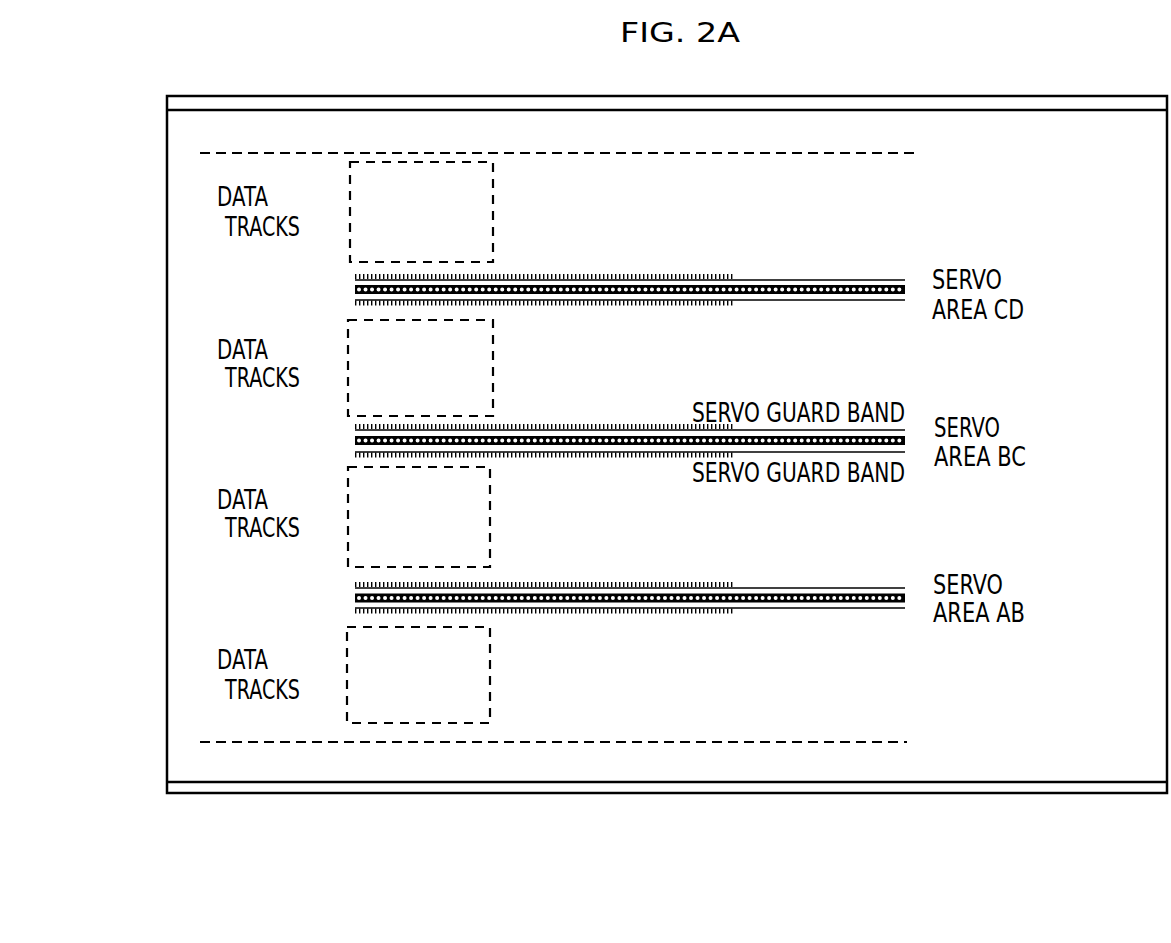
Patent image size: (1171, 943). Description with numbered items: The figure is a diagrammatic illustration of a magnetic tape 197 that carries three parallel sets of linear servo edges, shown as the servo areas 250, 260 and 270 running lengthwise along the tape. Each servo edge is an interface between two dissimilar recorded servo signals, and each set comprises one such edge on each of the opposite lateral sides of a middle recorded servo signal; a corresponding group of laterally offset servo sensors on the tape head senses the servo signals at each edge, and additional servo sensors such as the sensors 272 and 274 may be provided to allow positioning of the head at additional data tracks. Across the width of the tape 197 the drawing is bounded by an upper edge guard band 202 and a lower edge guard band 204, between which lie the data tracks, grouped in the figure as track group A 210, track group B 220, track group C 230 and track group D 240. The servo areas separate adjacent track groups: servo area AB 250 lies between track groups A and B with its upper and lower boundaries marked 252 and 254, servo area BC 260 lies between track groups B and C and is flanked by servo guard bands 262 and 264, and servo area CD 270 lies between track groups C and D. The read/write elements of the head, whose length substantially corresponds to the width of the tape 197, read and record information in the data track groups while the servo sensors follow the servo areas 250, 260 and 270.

The magnetic tape 197 is at (1099, 804).
The top edge guard band 202 is at (864, 126).
The bottom edge guard band 204 is at (885, 770).
The track group A 210 is at (486, 680).
The track group B 220 is at (486, 518).
The track group C 230 is at (486, 372).
The track group D 240 is at (486, 213).
The servo area 250 is at (818, 598).
The upper boundary of servo area AB 252 is at (758, 590).
The lower boundary of servo area AB 254 is at (755, 610).
The servo area 260 is at (676, 440).
The upper servo guard band BC 262 is at (612, 432).
The lower servo guard band BC 264 is at (610, 452).
The servo area 270 is at (672, 288).
The servo sensor 272 is at (755, 280).
The servo sensor 274 is at (753, 300).